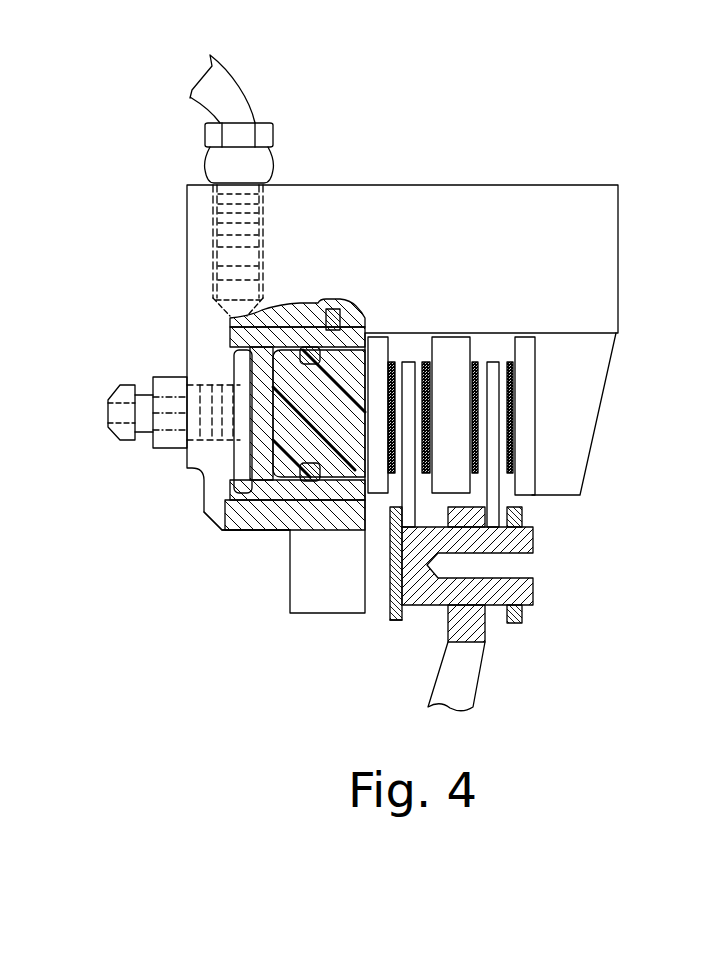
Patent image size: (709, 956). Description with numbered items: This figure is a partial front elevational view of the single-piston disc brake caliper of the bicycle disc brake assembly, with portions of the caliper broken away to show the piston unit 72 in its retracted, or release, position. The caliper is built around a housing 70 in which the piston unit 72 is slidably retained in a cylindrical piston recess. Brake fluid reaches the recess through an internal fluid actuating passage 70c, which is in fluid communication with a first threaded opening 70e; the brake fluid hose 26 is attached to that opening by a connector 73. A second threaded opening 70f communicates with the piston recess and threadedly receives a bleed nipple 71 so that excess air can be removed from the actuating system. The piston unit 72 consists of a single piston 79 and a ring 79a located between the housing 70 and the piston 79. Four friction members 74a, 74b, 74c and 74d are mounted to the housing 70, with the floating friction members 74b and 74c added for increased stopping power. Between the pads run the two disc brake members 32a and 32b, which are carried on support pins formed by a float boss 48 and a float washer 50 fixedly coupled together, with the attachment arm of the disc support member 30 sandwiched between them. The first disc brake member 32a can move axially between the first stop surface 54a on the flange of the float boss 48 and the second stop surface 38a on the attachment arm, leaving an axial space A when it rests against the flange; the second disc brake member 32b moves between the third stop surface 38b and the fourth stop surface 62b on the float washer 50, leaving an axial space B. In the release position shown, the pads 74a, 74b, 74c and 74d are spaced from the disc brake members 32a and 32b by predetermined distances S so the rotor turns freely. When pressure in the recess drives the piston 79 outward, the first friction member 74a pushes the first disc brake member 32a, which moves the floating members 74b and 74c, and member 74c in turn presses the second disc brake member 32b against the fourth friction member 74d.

The brake fluid hose 26 is at (247, 93).
The connector 73 is at (272, 132).
The housing 70 is at (497, 180).
The internal fluid actuating passage 70c is at (213, 313).
The first threaded opening 70e is at (253, 207).
The second threaded opening 70f is at (192, 372).
The bleed nipple 71 is at (118, 438).
The piston 79 is at (233, 481).
The ring 79a is at (332, 308).
The piston unit 72 is at (265, 518).
The first friction member 74a is at (379, 337).
The floating friction member 74b is at (441, 337).
The floating friction member 74c is at (493, 338).
The fourth friction member 74d is at (530, 333).
The first disc brake member 32a is at (432, 412).
The second disc brake member 32b is at (515, 432).
The predetermined distances S is at (505, 350).
The fourth stop surface 62b is at (530, 527).
The second stop surface 38a is at (447, 512).
The third stop surface 38b is at (486, 617).
The float boss 48 is at (390, 618).
The float washer 50 is at (540, 622).
The disc support member 30 is at (492, 685).
The first stop surface 54a is at (402, 620).
The axial space A is at (434, 516).
The axial space B is at (505, 506).